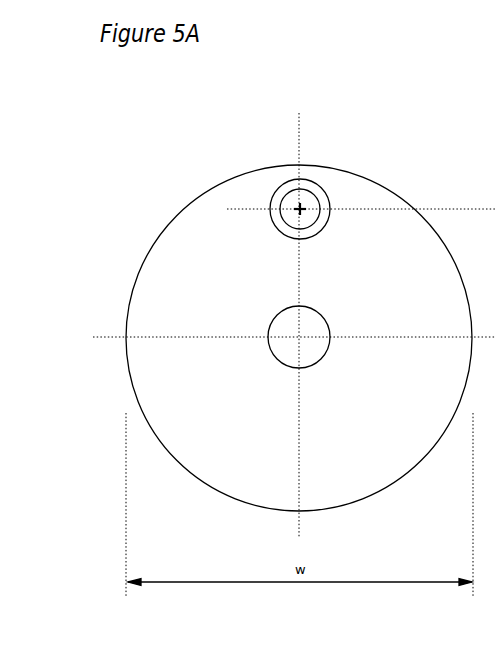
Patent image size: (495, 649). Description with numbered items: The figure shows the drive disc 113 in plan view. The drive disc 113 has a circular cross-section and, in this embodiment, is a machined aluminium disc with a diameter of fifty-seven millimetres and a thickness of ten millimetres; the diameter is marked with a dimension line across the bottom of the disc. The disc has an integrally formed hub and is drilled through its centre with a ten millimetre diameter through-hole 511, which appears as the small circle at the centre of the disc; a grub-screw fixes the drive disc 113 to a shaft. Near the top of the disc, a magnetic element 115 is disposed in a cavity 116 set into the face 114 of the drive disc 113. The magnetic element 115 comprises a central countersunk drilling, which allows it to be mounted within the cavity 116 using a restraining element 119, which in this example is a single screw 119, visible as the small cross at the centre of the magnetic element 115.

The drive disc 113 is at (185, 228).
The face 114 is at (178, 300).
The magnetic element 115 is at (316, 189).
The cavity 116 is at (330, 198).
The restraining element 119 is at (287, 204).
The through-hole 511 is at (282, 350).